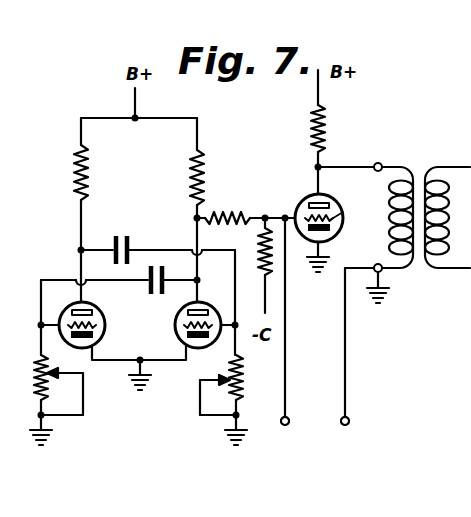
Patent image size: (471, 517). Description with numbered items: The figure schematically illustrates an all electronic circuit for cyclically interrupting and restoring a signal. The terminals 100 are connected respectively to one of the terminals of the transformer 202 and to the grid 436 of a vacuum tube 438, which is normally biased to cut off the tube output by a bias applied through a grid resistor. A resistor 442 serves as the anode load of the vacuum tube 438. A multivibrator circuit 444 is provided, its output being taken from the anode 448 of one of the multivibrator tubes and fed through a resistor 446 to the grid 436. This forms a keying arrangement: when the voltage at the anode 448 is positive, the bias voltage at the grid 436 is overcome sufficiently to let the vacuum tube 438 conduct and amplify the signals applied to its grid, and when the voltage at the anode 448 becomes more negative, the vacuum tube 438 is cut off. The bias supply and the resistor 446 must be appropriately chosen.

The multivibrator circuit 444 is at (150, 167).
The resistor 446 is at (241, 198).
The anode 448 is at (176, 308).
The grid 436 is at (302, 203).
The vacuum tube 438 is at (343, 212).
The resistor 442 is at (325, 143).
The transformer 202 is at (445, 162).
The terminals 100 is at (341, 424).